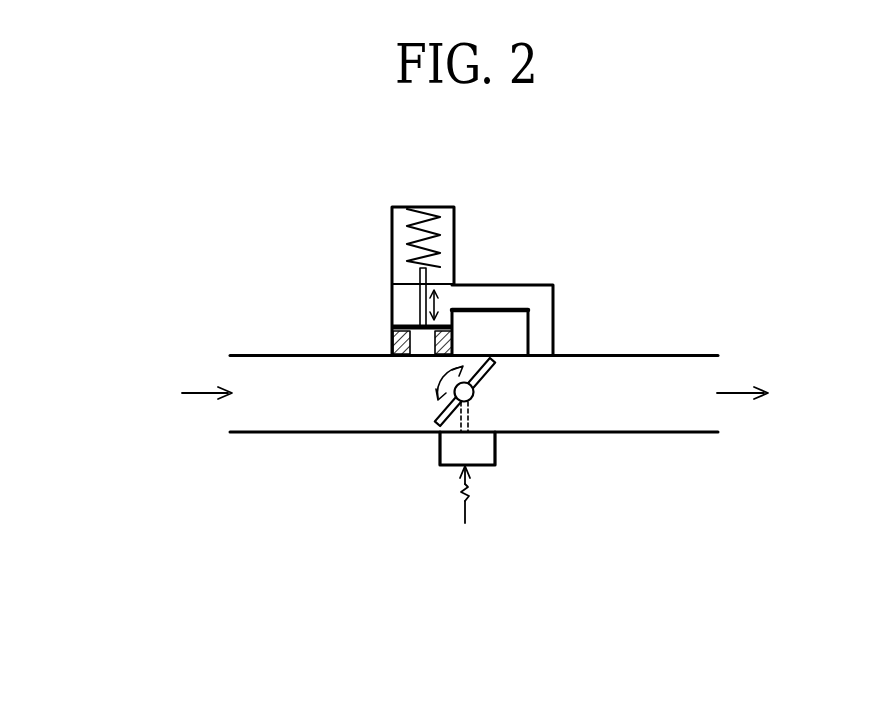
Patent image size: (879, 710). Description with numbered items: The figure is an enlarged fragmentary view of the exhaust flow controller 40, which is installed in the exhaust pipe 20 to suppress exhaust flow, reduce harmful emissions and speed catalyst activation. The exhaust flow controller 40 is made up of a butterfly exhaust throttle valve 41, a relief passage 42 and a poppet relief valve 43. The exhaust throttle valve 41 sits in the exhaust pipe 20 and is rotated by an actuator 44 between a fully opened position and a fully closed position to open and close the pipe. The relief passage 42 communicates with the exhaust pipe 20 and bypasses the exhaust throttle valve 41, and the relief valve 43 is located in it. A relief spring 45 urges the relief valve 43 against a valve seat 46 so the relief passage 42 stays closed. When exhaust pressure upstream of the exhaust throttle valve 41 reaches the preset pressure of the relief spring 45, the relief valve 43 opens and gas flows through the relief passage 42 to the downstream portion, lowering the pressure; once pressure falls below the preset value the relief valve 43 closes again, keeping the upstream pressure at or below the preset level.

The exhaust pipe 20 is at (280, 366).
The exhaust flow controller 40 is at (555, 213).
The exhaust throttle valve 41 is at (448, 402).
The relief passage 42 is at (520, 285).
The relief valve 43 is at (411, 323).
The actuator 44 is at (488, 452).
The relief spring 45 is at (434, 240).
The valve seat 46 is at (393, 346).